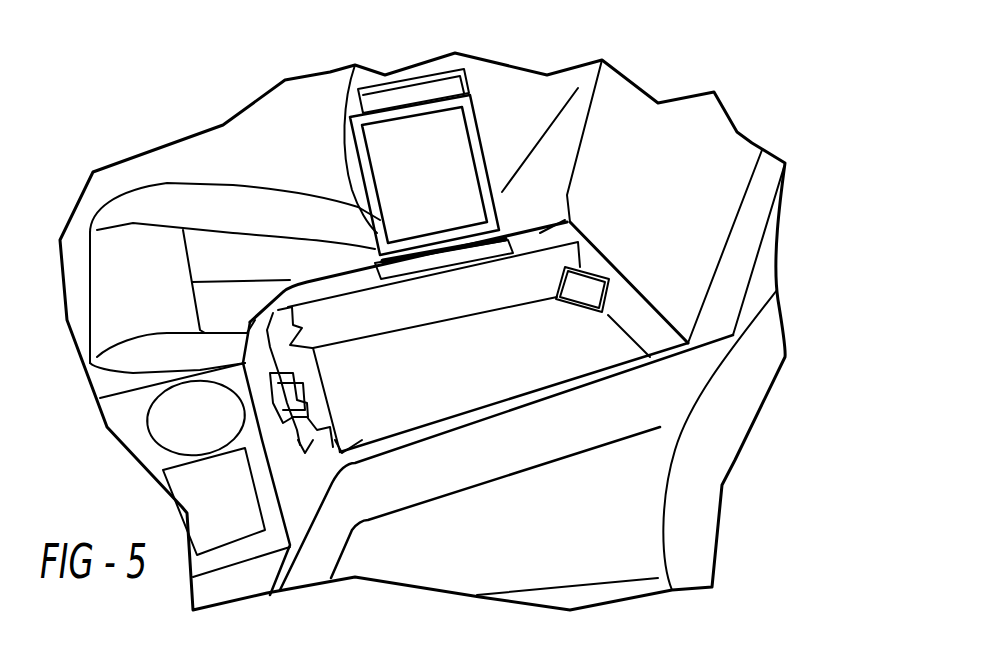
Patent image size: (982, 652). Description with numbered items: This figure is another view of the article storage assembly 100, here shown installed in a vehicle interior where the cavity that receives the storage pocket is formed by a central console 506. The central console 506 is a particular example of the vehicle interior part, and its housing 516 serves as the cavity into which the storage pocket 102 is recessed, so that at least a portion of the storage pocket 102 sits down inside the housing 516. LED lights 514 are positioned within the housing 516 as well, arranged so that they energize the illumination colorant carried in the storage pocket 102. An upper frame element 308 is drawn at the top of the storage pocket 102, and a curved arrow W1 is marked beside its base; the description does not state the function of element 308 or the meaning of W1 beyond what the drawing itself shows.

The vehicle interior console assembly 100 is at (330, 145).
The storage pocket 102 is at (462, 158).
The display holder frame 308 is at (408, 92).
The central console 506 is at (508, 372).
The LED lights 514 is at (598, 283).
The housing 516 is at (607, 402).
The rotation direction W1 is at (358, 228).